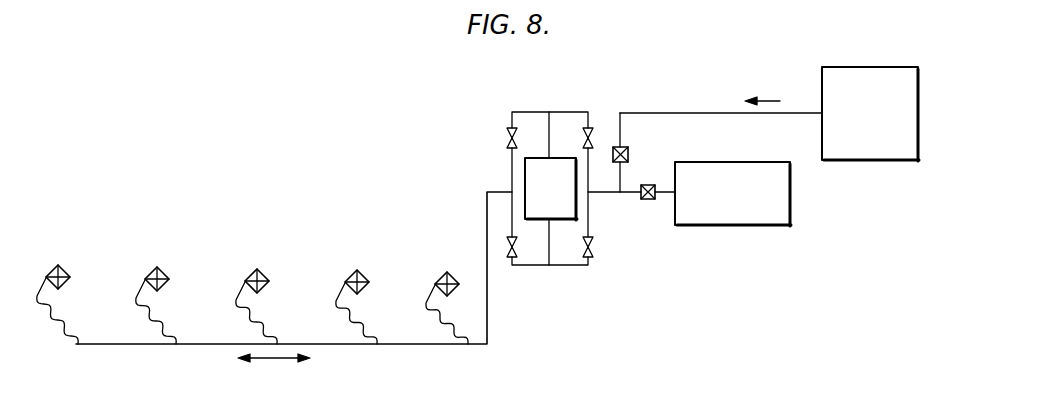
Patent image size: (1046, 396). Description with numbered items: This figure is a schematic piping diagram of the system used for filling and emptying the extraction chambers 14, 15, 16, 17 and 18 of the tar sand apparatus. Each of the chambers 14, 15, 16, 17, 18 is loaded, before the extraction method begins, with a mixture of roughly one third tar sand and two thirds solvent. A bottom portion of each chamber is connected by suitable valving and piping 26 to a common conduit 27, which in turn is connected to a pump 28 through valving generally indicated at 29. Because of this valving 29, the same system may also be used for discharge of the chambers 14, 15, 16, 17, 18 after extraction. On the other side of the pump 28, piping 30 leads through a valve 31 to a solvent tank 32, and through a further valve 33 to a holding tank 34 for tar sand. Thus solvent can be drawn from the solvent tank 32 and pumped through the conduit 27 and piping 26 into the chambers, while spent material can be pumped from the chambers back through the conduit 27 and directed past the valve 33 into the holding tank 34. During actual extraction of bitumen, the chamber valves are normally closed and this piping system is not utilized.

The extraction chamber 14 is at (65, 270).
The extraction chamber 15 is at (164, 272).
The extraction chamber 16 is at (269, 290).
The extraction chamber 17 is at (364, 275).
The extraction chamber 18 is at (449, 272).
The piping 26 is at (266, 321).
The conduit 27 is at (346, 345).
The pump 28 is at (541, 212).
The valving 29 is at (507, 138).
The piping 30 is at (605, 193).
The valve 31 is at (626, 148).
The solvent tank 32 is at (855, 122).
The valve 33 is at (649, 184).
The holding tank 34 is at (719, 219).